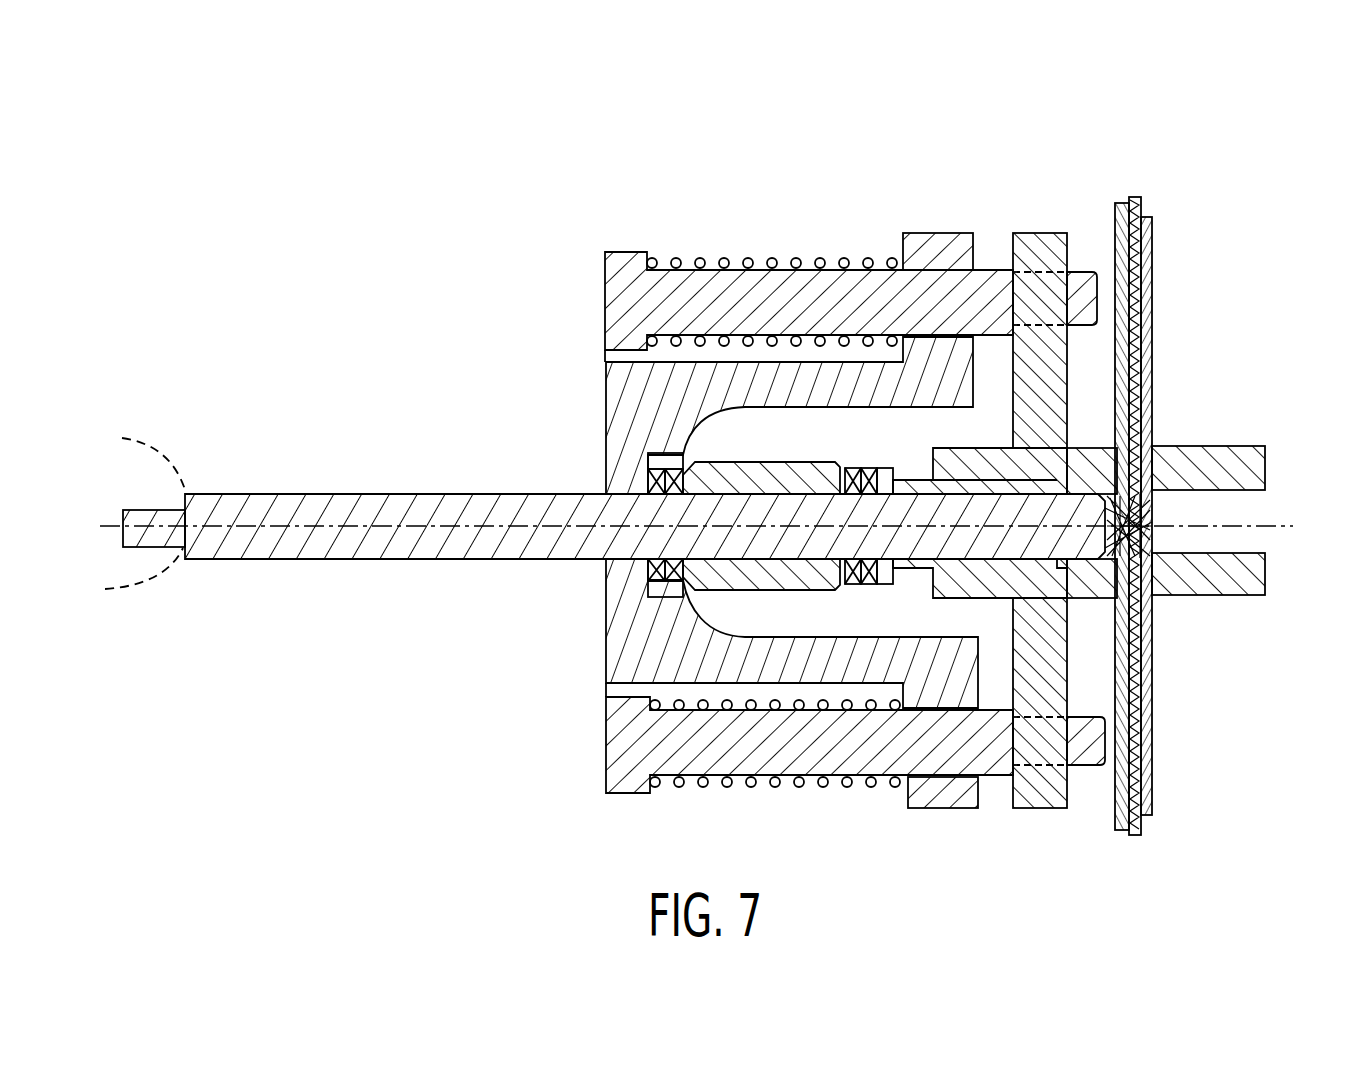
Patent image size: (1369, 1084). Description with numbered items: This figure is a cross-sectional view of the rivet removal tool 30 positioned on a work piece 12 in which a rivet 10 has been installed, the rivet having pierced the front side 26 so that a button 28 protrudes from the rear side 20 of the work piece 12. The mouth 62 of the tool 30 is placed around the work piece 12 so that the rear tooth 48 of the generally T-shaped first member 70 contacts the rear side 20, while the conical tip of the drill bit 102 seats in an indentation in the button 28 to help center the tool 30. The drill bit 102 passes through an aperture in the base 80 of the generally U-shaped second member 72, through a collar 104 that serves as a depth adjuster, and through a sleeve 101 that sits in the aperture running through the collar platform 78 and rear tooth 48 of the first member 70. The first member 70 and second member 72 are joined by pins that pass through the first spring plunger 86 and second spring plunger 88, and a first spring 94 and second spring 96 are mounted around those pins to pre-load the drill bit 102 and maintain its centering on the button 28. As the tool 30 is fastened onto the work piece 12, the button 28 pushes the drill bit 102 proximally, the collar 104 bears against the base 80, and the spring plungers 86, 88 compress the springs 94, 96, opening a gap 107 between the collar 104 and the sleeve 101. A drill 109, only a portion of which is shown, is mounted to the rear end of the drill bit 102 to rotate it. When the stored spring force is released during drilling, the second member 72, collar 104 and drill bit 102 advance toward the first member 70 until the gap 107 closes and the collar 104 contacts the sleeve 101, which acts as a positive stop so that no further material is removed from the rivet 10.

The rivet 10 is at (1150, 522).
The work piece 12 is at (1140, 836).
The rear side 20 is at (1115, 240).
The front side 26 is at (1152, 286).
The button 28 is at (1160, 598).
The tool 30 is at (1243, 800).
The rear tooth 48 is at (1106, 599).
The mouth 62 is at (1155, 434).
The first member 70 is at (1033, 809).
The second member 72 is at (912, 799).
The collar platform 78 is at (967, 453).
The base 80 is at (628, 378).
The first spring plunger 86 is at (955, 798).
The second spring plunger 88 is at (921, 243).
The first spring 94 is at (777, 788).
The second spring 96 is at (748, 258).
The sleeve 101 is at (900, 470).
The drill bit 102 is at (398, 497).
The collar 104 is at (703, 472).
The gap 107 is at (889, 570).
The drill 109 is at (120, 452).